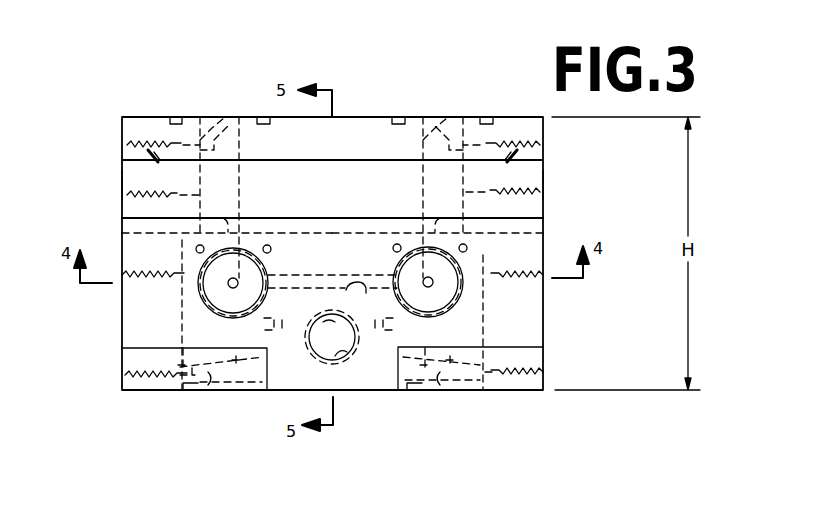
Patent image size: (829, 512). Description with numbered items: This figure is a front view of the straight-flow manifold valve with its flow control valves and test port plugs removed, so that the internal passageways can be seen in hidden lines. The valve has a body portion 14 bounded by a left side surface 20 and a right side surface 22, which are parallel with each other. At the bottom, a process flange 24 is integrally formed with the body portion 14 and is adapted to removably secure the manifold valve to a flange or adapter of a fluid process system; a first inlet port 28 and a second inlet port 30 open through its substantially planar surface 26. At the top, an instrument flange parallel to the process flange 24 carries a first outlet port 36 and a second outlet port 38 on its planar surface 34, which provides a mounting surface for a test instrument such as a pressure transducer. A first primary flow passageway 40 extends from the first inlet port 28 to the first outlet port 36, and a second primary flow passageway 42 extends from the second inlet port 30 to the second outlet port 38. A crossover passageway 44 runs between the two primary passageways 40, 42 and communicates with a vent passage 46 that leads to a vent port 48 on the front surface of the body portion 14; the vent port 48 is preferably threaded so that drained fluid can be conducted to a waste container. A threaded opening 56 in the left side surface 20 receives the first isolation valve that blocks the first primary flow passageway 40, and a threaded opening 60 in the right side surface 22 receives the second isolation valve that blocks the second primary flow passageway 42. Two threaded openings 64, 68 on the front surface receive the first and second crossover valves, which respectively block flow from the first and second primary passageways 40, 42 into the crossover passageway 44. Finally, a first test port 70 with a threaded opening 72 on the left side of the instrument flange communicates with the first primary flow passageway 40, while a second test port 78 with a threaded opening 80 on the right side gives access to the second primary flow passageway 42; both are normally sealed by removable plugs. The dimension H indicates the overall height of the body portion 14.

The body portion 14 is at (543, 200).
The left side surface 20 is at (122, 218).
The right side surface 22 is at (543, 218).
The process flange 24 is at (253, 372).
The planar surface 26 is at (402, 390).
The first inlet port 28 is at (203, 363).
The second inlet port 30 is at (437, 383).
The planar surface 34 is at (343, 117).
The first outlet port 36 is at (214, 115).
The second outlet port 38 is at (440, 117).
The first primary flow passageway 40 is at (122, 236).
The second primary flow passageway 42 is at (543, 232).
The crossover passageway 44 is at (366, 285).
The vent passage 46 is at (330, 325).
The vent port 48 is at (345, 355).
The threaded opening 56 is at (135, 375).
The threaded opening 60 is at (515, 372).
The threaded opening 64 is at (228, 312).
The threaded opening 68 is at (437, 308).
The first test port 70 is at (108, 182).
The threaded opening 72 is at (122, 165).
The second test port 78 is at (552, 181).
The threaded opening 80 is at (553, 160).